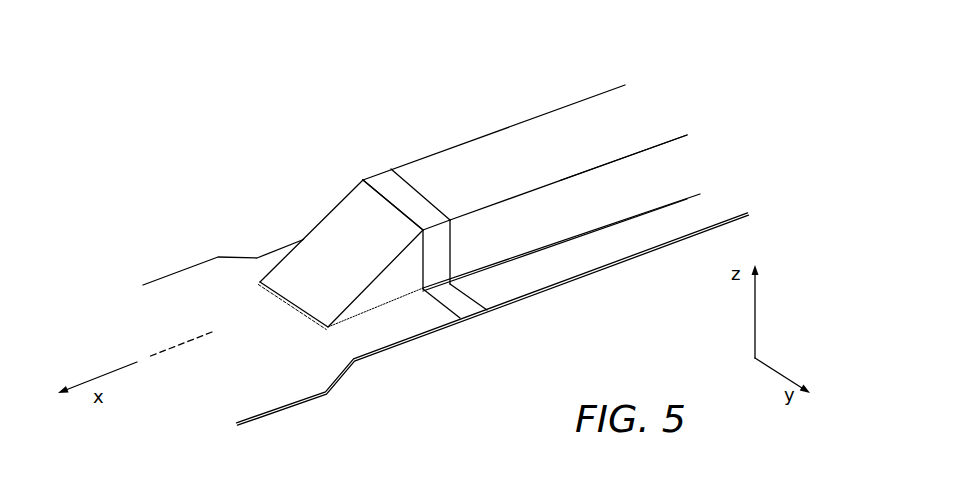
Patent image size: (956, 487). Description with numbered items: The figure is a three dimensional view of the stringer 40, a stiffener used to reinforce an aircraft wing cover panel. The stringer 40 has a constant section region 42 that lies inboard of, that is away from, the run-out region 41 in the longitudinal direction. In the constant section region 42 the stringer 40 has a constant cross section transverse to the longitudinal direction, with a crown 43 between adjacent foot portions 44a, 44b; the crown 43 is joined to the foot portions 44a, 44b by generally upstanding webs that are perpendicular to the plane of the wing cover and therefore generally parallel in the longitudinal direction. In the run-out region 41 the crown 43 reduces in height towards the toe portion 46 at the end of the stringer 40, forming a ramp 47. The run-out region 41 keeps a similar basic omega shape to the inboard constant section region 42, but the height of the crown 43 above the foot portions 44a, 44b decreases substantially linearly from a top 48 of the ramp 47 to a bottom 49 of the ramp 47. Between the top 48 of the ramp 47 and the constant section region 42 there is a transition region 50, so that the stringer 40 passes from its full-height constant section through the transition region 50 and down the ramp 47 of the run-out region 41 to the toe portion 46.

The stringer 40 is at (506, 92).
The run-out region 41 is at (312, 196).
The constant section region 42 is at (665, 165).
The crown 43 is at (563, 160).
The foot portion 44a is at (282, 250).
The foot portion 44b is at (562, 263).
The toe portion 46 is at (212, 378).
The ramp 47 is at (360, 268).
The top of the ramp 48 is at (365, 195).
The bottom of the ramp 49 is at (313, 300).
The transition region 50 is at (391, 192).